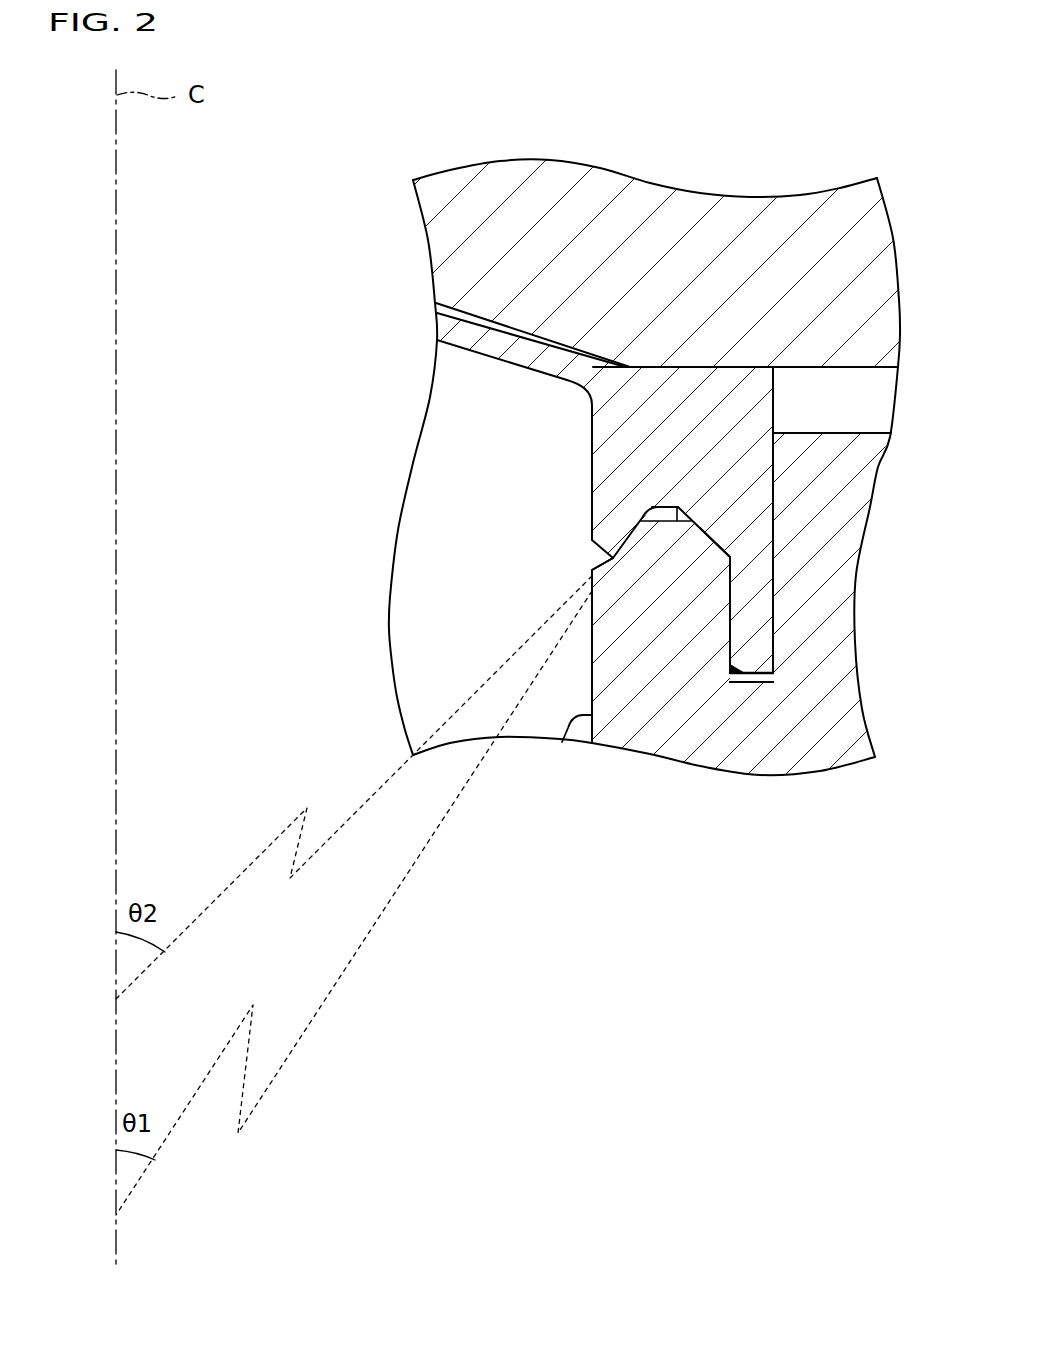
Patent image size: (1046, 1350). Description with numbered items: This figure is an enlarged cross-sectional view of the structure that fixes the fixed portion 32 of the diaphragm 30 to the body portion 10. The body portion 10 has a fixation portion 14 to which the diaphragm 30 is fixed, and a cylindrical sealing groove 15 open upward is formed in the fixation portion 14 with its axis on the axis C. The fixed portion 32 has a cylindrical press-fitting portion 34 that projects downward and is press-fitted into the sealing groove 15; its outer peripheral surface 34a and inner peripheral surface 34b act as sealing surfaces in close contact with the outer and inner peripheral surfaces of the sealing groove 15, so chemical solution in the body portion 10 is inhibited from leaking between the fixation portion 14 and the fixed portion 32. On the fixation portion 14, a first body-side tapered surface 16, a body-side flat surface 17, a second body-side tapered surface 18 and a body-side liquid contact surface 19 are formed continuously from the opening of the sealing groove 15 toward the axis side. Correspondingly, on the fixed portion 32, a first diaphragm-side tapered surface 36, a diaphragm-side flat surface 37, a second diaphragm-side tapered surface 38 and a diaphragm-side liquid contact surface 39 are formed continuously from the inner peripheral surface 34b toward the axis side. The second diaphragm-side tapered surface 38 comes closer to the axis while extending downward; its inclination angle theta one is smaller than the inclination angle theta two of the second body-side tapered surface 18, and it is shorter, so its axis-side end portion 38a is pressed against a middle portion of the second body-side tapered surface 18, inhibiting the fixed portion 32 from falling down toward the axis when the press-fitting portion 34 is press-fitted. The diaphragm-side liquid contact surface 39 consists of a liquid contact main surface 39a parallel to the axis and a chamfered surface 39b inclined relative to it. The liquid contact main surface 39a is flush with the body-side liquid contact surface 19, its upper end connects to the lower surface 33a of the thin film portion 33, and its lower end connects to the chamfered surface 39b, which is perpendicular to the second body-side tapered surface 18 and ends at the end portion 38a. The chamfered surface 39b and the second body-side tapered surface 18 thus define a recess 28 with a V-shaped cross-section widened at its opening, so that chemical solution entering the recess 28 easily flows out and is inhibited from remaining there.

The body portion 10 is at (863, 688).
The fixation portion 14 is at (650, 743).
The sealing groove 15 is at (755, 685).
The first body-side tapered surface 16 is at (705, 527).
The body-side flat surface 17 is at (668, 505).
The second body-side tapered surface 18 is at (640, 525).
The body-side liquid contact surface 19 is at (562, 740).
The recess 28 is at (590, 564).
The diaphragm 30 is at (643, 366).
The fixed portion 32 is at (699, 385).
The thin film portion 33 is at (462, 328).
The lower surface of the thin film portion 33a is at (477, 355).
The press-fitting portion 34 is at (755, 588).
The outer peripheral surface 34a is at (775, 630).
The inner peripheral surface 34b is at (728, 635).
The first diaphragm-side tapered surface 36 is at (717, 547).
The diaphragm-side flat surface 37 is at (652, 512).
The second diaphragm-side tapered surface 38 is at (628, 540).
The end portion 38a is at (613, 555).
The diaphragm-side liquid contact surface 39 is at (590, 425).
The liquid contact main surface 39a is at (590, 468).
The chamfered surface 39b is at (590, 548).